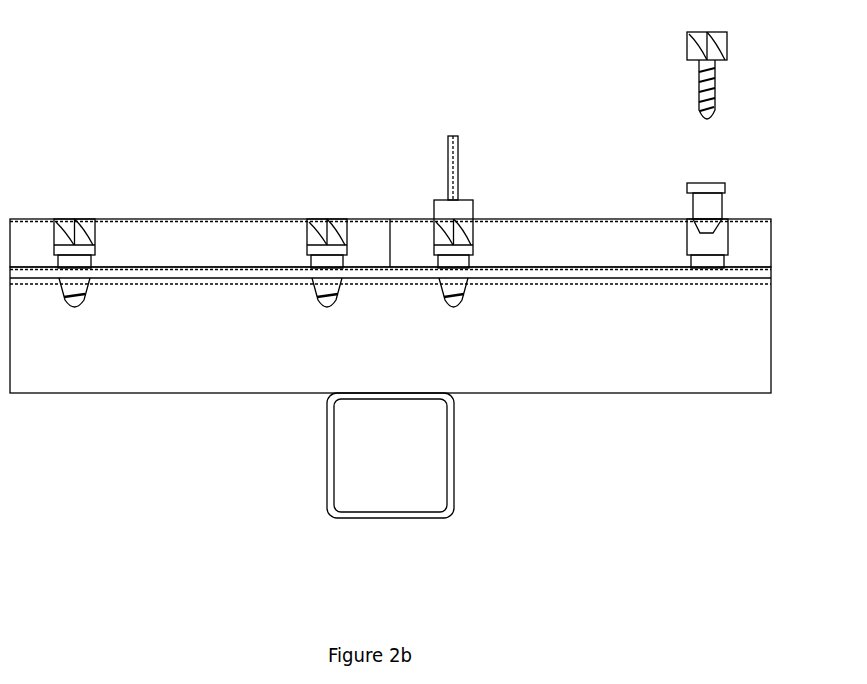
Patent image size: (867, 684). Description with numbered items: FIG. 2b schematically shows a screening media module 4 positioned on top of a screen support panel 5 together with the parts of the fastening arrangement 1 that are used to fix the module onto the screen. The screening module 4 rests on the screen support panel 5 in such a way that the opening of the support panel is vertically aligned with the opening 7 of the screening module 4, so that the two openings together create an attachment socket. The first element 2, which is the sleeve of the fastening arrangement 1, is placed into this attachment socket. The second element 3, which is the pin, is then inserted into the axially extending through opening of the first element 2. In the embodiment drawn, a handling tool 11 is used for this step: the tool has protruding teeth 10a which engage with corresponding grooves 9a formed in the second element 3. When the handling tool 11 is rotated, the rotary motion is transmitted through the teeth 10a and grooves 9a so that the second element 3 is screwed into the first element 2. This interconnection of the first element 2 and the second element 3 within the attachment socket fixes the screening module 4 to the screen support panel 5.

The fastening arrangement 1 is at (302, 206).
The first element 2 is at (717, 193).
The second element 3 is at (723, 50).
The screening media module 4 is at (555, 235).
The screen support panel 5 is at (736, 338).
The opening 7 is at (712, 243).
The grooves 9a is at (57, 219).
The protruding teeth 10a is at (472, 222).
The handling tool 11 is at (455, 153).